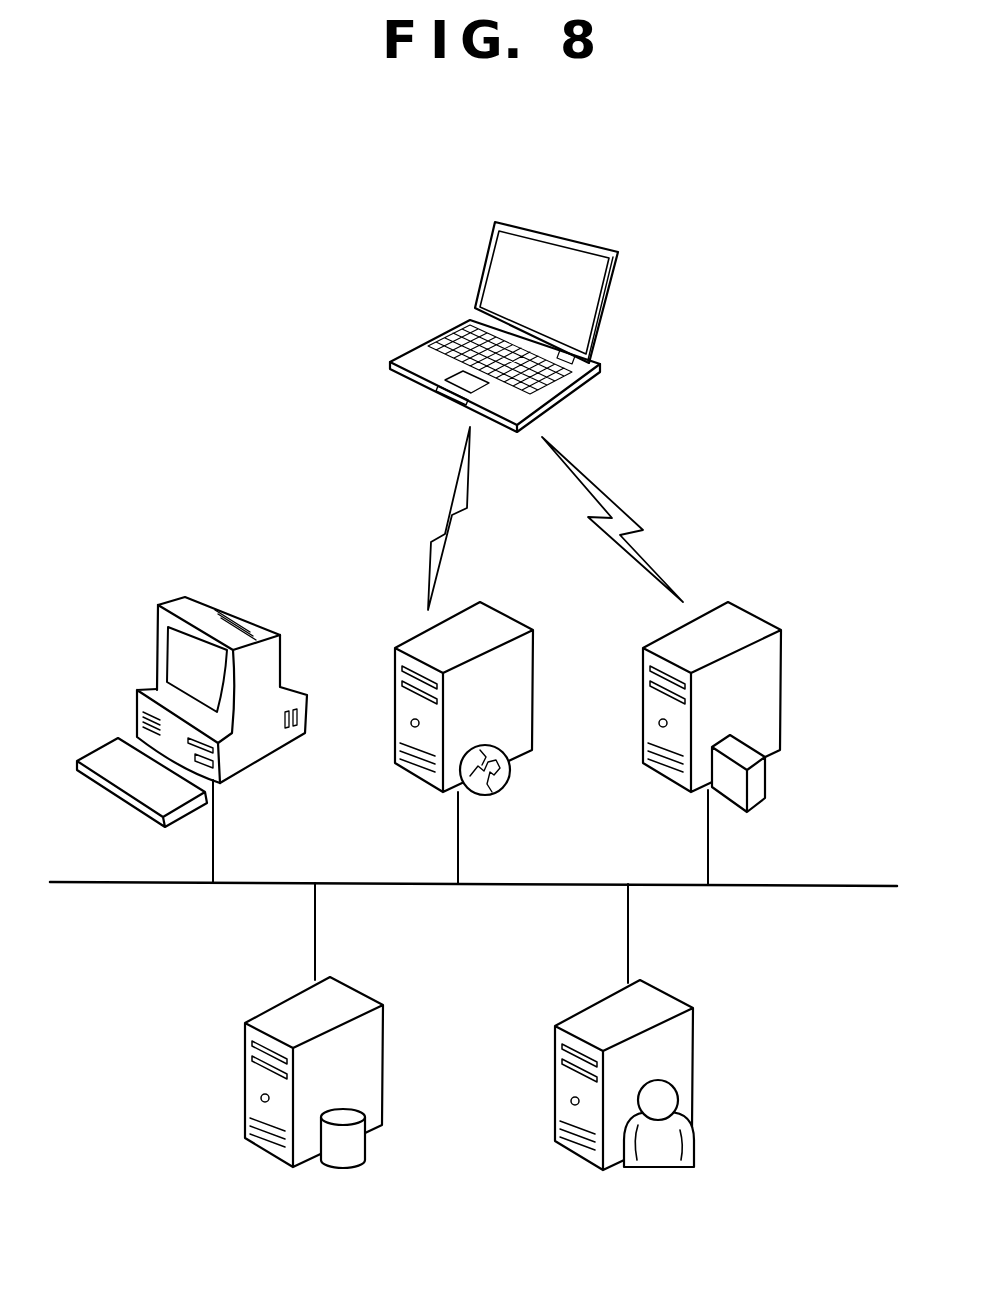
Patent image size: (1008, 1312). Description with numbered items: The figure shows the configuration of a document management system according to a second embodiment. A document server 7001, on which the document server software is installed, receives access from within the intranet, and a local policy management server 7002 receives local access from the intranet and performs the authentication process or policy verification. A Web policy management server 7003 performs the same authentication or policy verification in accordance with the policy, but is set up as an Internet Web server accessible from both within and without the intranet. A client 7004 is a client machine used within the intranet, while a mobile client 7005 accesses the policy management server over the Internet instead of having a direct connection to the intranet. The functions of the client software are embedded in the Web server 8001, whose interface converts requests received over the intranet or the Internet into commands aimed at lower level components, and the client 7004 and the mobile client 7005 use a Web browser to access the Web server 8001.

The mobile client 7005 is at (642, 220).
The client 7004 is at (298, 592).
The Web server 8001 is at (547, 588).
The Web policy management server 7003 is at (795, 593).
The document server 7001 is at (397, 967).
The local policy management server 7002 is at (710, 968).